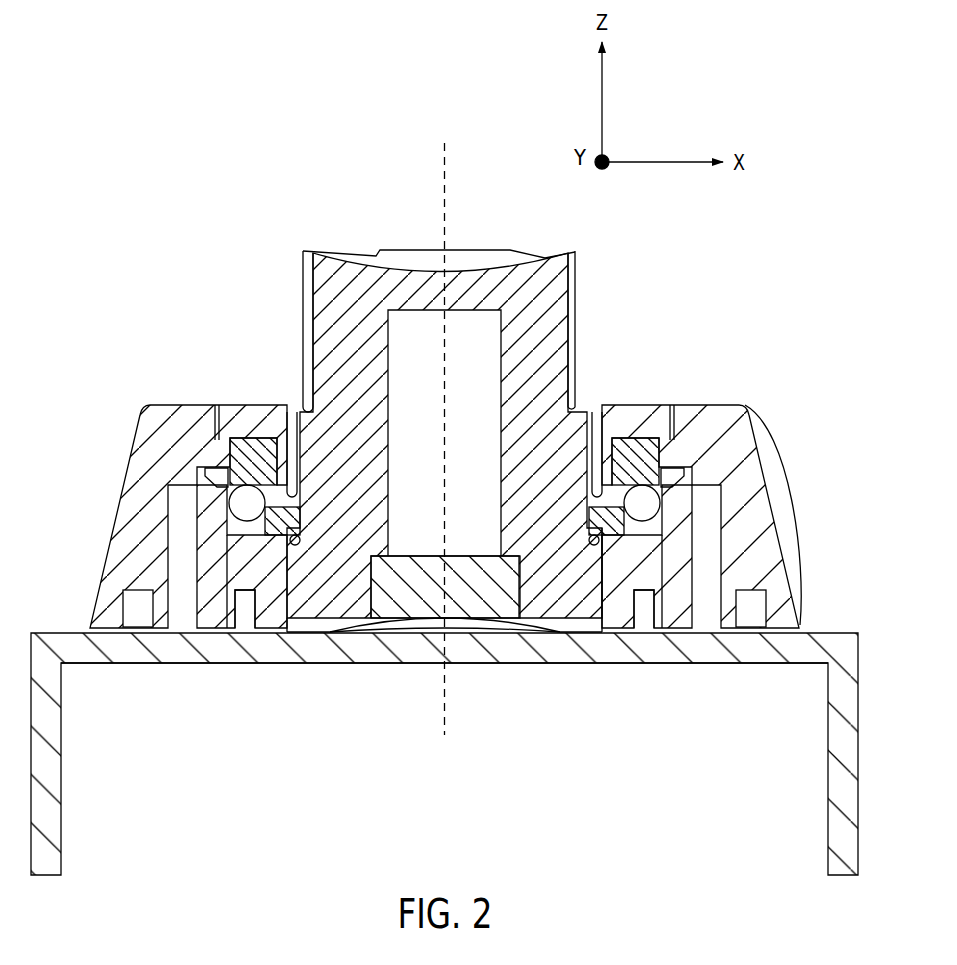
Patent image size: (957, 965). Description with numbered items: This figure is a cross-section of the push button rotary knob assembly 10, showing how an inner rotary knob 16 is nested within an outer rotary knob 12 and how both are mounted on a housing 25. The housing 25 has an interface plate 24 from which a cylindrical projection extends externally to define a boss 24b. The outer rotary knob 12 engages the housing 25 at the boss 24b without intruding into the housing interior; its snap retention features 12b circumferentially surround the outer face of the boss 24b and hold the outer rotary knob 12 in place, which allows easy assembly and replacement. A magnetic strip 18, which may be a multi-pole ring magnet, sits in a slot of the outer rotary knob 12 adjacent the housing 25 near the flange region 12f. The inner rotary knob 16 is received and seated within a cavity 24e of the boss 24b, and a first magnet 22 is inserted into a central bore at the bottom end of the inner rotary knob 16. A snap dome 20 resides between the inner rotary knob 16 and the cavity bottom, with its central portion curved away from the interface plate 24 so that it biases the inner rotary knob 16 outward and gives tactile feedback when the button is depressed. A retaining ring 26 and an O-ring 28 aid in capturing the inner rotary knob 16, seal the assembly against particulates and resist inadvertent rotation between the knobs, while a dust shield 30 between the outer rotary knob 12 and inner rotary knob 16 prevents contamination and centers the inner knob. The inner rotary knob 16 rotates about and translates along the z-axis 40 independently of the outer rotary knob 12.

The push button rotary knob assembly 10 is at (483, 131).
The outer rotary knob 12 is at (694, 396).
The snap retention features 12b is at (240, 592).
The housing flange 12f is at (646, 447).
The inner rotary knob 16 is at (319, 300).
The magnetic strip 18 is at (752, 622).
The snap dome 20 is at (333, 643).
The first magnet 22 is at (403, 597).
The interface plate 24 is at (640, 648).
The boss 24b is at (243, 555).
The cavity 24e is at (597, 587).
The housing 25 is at (703, 702).
The retaining ring 26 is at (228, 518).
The O-ring 28 is at (238, 487).
The dust shield 30 is at (226, 412).
The z-axis 40 is at (441, 207).